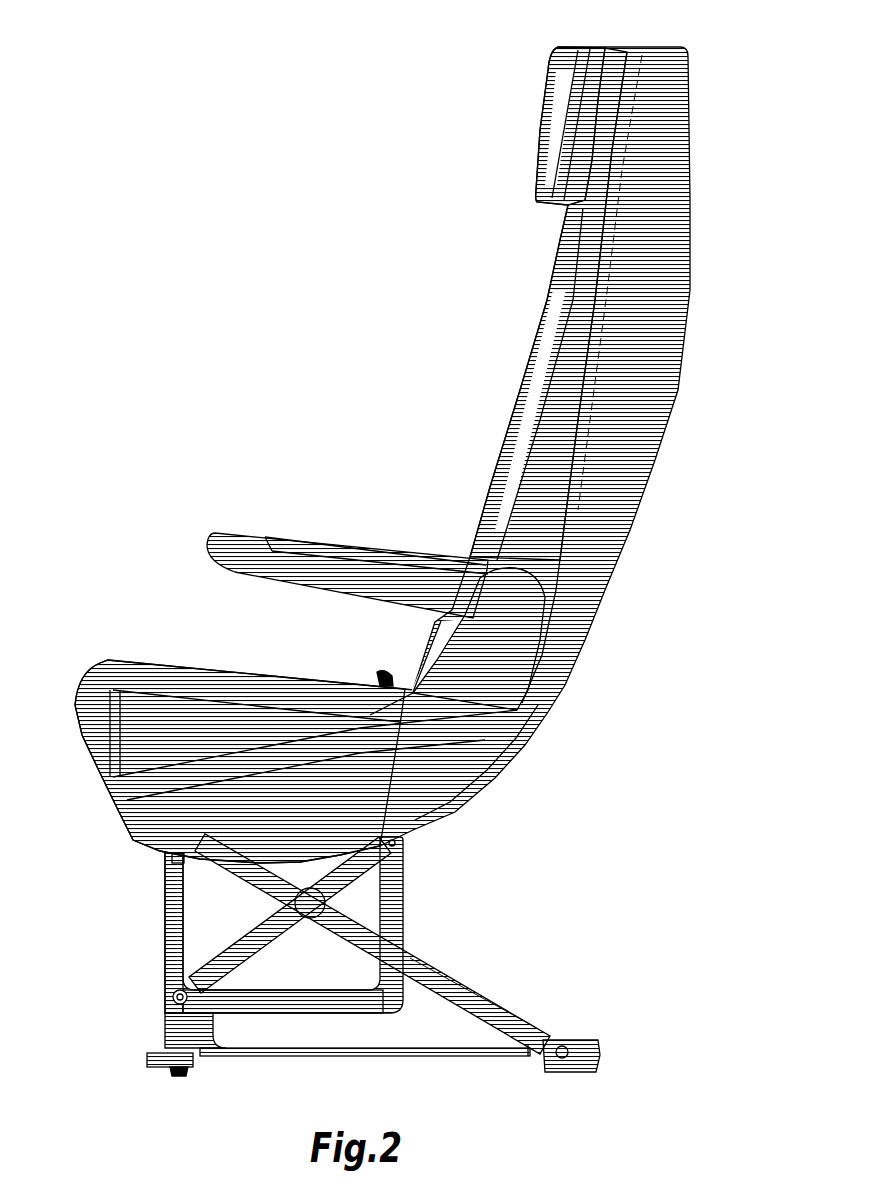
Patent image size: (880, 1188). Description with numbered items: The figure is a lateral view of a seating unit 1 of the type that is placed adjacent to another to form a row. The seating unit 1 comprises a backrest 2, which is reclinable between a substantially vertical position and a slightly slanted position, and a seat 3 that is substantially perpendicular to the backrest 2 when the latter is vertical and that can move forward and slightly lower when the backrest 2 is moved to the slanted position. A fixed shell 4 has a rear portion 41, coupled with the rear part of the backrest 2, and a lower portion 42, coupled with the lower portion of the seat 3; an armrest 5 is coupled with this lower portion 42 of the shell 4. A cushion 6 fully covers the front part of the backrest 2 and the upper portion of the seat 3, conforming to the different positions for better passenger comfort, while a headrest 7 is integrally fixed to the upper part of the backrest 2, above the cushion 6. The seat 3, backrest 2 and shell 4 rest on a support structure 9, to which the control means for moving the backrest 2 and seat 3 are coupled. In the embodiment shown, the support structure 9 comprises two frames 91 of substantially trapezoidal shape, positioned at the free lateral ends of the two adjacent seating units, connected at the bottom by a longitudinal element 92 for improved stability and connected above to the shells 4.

The seating unit 1 is at (368, 246).
The backrest 2 is at (590, 277).
The seat 3 is at (113, 747).
The fixed shell 4 is at (594, 612).
The rear portion 41 is at (652, 343).
The lower portion 42 is at (452, 797).
The armrest 5 is at (227, 557).
The cushion 6 is at (492, 482).
The headrest 7 is at (560, 83).
The support structure 9 is at (440, 970).
The frame 91 is at (166, 906).
The longitudinal element 92 is at (168, 997).